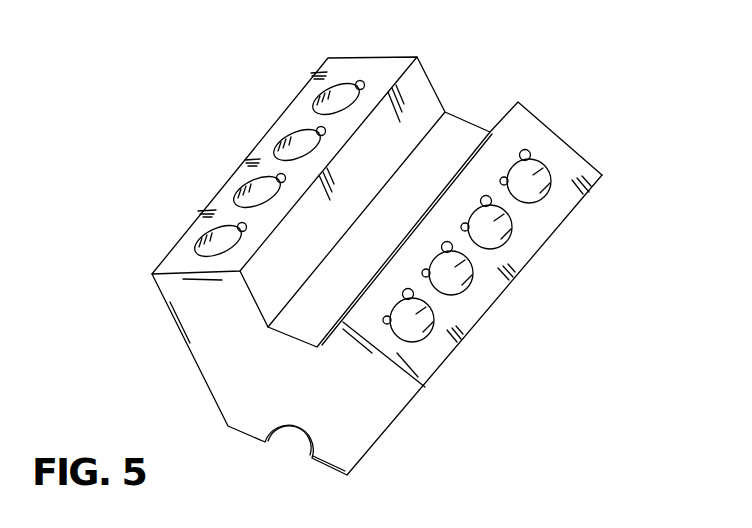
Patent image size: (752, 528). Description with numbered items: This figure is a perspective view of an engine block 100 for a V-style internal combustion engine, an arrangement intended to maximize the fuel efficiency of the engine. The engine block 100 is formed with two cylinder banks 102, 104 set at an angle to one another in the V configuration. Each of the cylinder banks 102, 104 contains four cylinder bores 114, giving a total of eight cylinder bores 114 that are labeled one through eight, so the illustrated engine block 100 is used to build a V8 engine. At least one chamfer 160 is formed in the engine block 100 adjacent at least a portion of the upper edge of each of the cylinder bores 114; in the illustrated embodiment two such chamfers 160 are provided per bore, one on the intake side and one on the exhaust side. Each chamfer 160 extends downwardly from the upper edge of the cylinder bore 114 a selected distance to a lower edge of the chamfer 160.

The engine block 100 is at (600, 86).
The cylinder bank 102 is at (290, 122).
The cylinder bank 104 is at (480, 304).
The cylinder bore 114 is at (236, 184).
The chamfer 160 is at (530, 150).